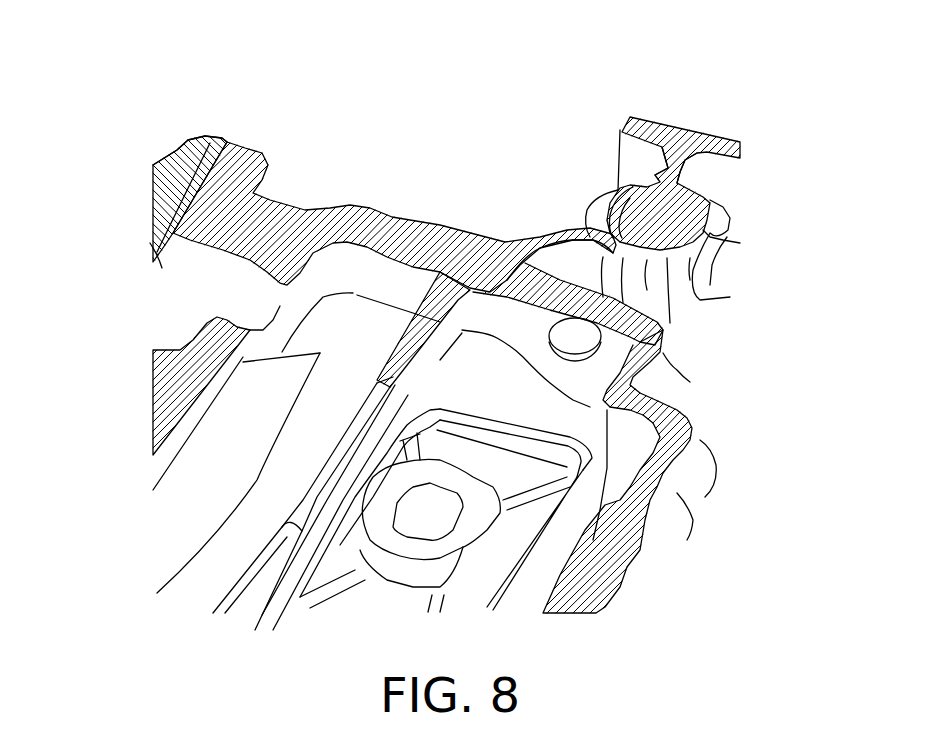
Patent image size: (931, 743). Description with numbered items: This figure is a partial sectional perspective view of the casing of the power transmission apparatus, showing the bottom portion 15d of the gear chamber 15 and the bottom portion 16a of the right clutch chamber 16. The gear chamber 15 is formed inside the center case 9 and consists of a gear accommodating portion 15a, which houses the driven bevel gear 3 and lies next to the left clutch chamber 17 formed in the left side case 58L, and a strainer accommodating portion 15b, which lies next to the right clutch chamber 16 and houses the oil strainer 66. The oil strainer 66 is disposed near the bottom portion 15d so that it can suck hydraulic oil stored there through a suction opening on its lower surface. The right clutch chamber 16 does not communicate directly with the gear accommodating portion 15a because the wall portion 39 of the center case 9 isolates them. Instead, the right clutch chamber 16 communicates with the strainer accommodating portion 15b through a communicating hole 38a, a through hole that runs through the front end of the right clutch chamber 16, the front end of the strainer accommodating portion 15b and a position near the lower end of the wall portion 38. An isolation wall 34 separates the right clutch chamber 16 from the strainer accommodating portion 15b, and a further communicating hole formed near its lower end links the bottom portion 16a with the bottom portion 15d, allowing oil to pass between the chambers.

The driven bevel gear 3 is at (183, 436).
The center case 9 is at (280, 193).
The gear chamber 15 is at (515, 93).
The gear accommodating portion 15a is at (370, 262).
The strainer accommodating portion 15b is at (487, 312).
The bottom portion 15d is at (538, 252).
The right clutch chamber 16 is at (585, 265).
The bottom portion 16a is at (680, 175).
The left clutch chamber 17 is at (150, 188).
The isolation wall 34 is at (640, 513).
The wall portion 38 is at (630, 300).
The communicating hole 38a is at (580, 333).
The wall portion 39 is at (505, 255).
The left side case 58L is at (215, 137).
The oil strainer 66 is at (563, 543).